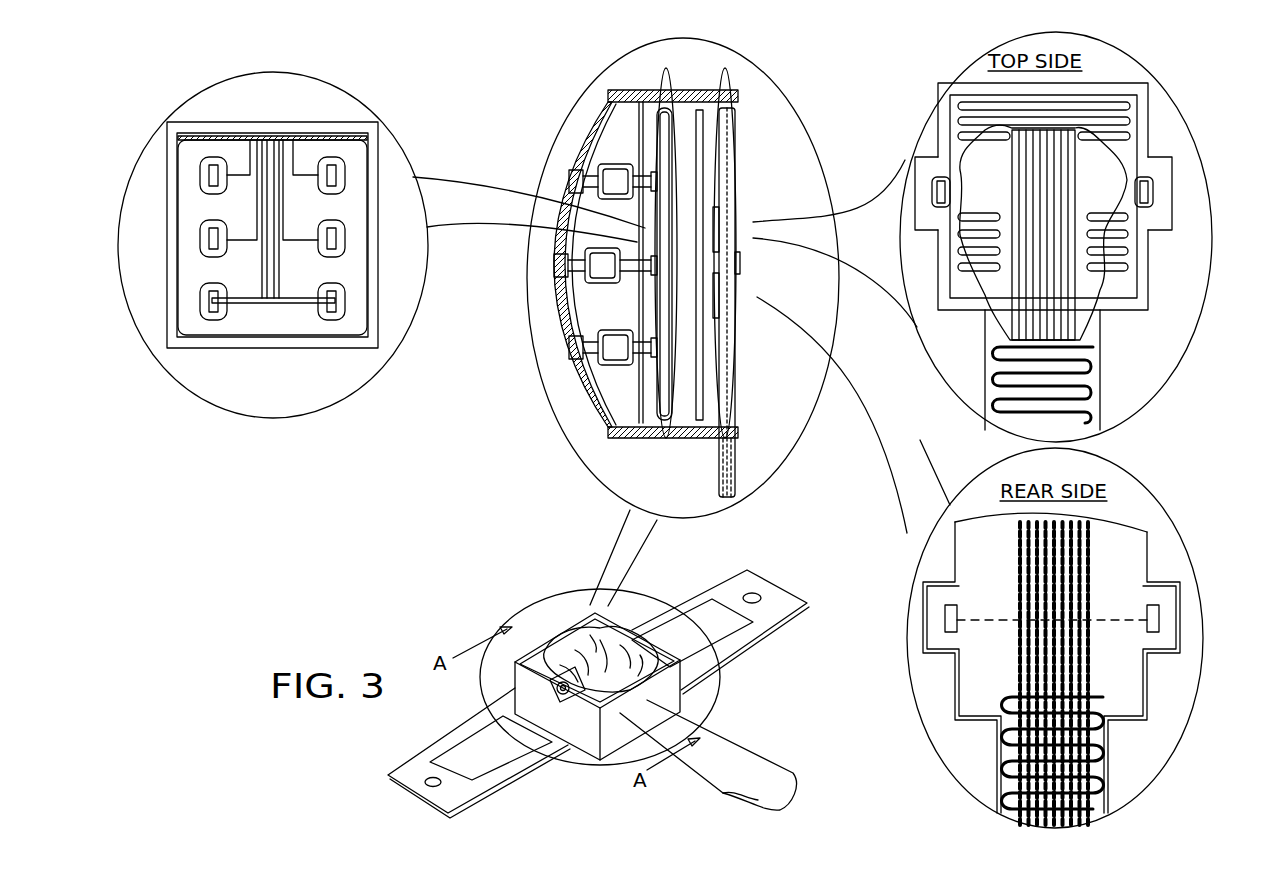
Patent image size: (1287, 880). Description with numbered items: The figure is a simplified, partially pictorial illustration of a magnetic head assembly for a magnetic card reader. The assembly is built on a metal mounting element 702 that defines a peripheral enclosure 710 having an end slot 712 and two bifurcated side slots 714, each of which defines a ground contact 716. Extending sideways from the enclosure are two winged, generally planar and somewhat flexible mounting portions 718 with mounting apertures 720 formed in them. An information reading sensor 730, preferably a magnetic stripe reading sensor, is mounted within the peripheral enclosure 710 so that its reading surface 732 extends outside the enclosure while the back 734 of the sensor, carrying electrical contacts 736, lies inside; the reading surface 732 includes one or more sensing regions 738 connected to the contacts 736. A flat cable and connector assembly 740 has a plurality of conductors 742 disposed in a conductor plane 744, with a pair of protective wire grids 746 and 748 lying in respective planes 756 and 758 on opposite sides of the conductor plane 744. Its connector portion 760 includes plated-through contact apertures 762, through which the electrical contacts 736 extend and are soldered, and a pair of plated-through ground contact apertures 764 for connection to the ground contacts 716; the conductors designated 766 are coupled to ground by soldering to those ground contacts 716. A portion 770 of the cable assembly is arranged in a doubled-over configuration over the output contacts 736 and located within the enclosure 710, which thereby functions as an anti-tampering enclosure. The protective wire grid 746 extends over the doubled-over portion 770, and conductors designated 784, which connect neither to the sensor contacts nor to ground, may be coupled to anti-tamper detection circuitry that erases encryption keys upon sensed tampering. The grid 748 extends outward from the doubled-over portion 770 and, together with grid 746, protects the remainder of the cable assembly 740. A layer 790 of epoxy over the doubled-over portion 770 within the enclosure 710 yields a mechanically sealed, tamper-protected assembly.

The mounting element 702 is at (450, 603).
The peripheral enclosure 710 is at (367, 343).
The end slot 712 is at (700, 706).
The bifurcated side slots 714 is at (572, 645).
The ground contact 716 is at (741, 266).
The mounting portions 718 is at (398, 774).
The mounting apertures 720 is at (426, 787).
The information reading sensor 730 is at (604, 382).
The reading surface 732 is at (558, 305).
The back of the sensor 734 is at (680, 295).
The electrical contacts 736 is at (207, 287).
The sensing regions 738 is at (575, 180).
The flat cable and connector assembly 740 is at (797, 753).
The conductors 742 is at (298, 173).
The conductor plane 744 is at (1100, 172).
The protective wire grid 746 is at (733, 457).
The protective wire grid 748 is at (719, 482).
The plane 756 is at (1148, 295).
The plane 758 is at (1122, 713).
The connector portion 760 is at (183, 200).
The plated-through contact apertures 762 is at (333, 317).
The plated-through ground contact apertures 764 is at (1153, 190).
The ground conductors 766 is at (955, 150).
The doubled-over portion 770 is at (735, 229).
The anti-tamper conductors 784 is at (1072, 322).
The layer of epoxy 790 is at (642, 658).